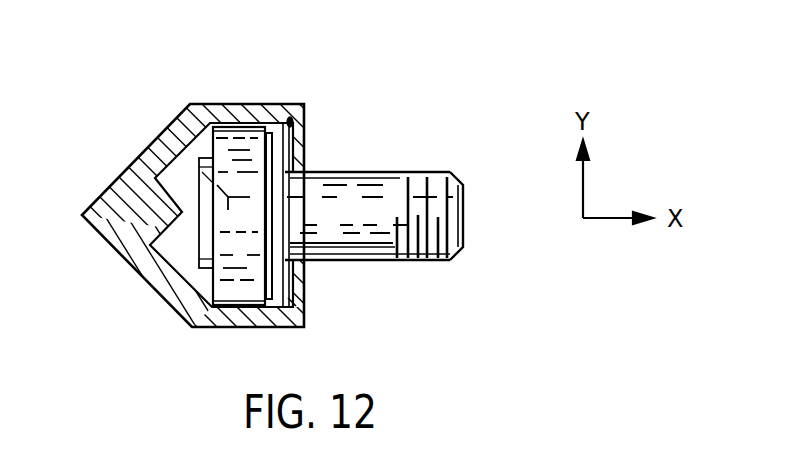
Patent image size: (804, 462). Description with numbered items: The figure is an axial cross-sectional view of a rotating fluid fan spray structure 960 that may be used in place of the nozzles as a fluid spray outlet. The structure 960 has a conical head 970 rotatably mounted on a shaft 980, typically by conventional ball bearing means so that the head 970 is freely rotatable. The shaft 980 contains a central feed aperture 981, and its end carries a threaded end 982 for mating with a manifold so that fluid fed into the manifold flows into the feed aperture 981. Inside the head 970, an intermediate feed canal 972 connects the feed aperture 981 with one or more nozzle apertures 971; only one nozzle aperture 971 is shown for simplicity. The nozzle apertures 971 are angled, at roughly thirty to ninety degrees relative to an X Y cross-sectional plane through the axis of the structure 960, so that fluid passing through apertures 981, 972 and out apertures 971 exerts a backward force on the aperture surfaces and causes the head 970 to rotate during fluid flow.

The structure 960 is at (268, 184).
The head 970 is at (143, 277).
The nozzle apertures 971 is at (161, 137).
The intermediate feed canal 972 is at (165, 243).
The shaft 980 is at (355, 262).
The central feed aperture 981 is at (465, 208).
The threaded end 982 is at (427, 262).